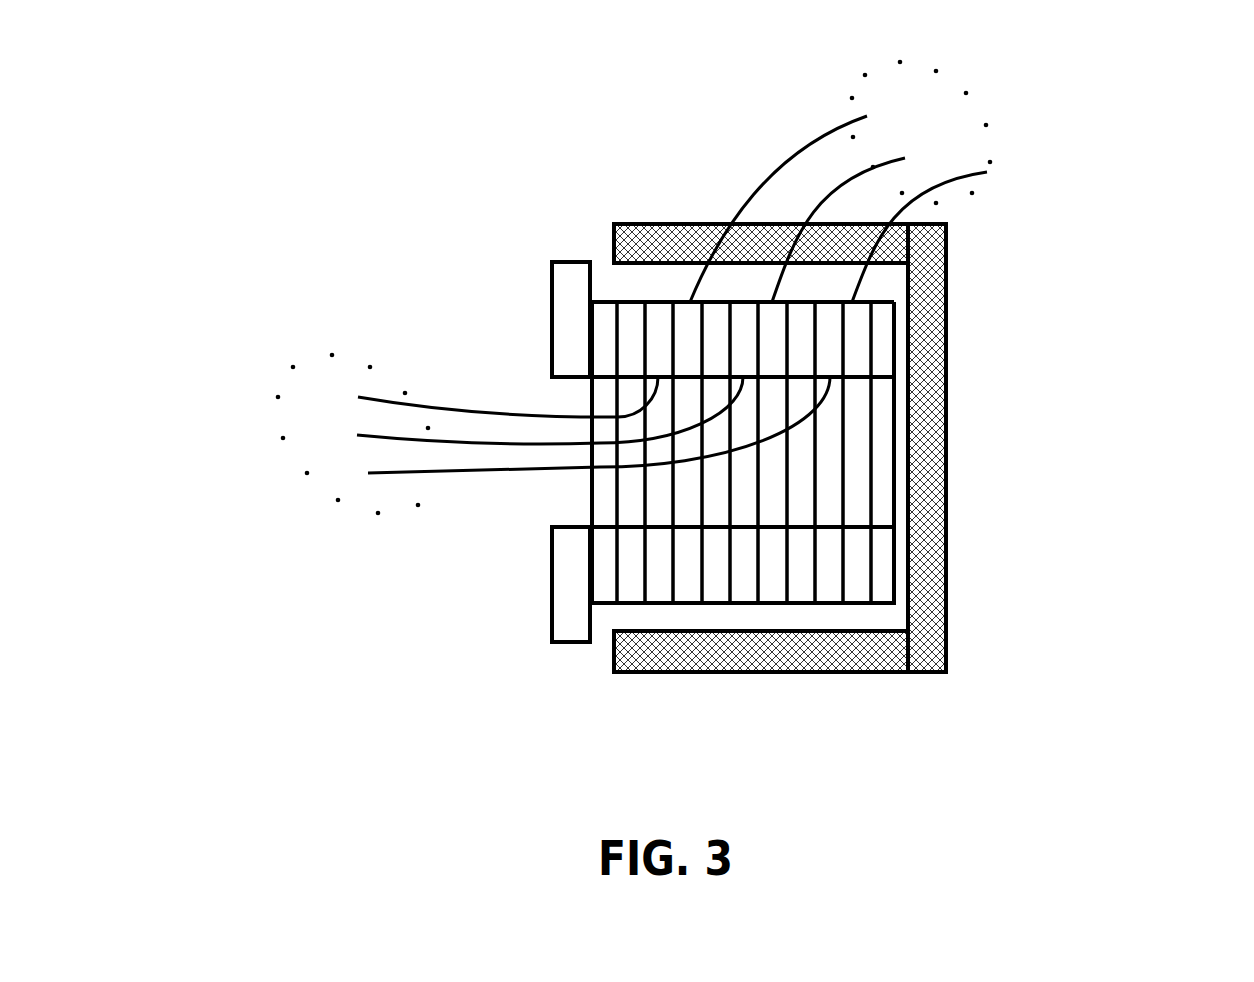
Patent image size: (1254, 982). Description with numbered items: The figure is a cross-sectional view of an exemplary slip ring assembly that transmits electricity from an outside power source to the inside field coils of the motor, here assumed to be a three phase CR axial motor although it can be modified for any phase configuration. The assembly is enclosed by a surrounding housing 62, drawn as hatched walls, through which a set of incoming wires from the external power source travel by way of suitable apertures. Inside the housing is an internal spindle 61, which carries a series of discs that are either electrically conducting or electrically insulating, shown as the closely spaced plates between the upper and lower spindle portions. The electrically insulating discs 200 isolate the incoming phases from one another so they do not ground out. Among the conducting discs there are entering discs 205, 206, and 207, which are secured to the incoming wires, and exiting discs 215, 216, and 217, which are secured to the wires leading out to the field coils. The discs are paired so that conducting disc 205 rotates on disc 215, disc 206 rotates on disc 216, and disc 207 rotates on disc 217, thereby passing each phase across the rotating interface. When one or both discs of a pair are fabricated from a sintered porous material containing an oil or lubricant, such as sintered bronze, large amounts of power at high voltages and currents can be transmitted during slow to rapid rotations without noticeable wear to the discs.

The internal spindle 61 is at (572, 583).
The surrounding housing 62 is at (613, 657).
The electrically insulating discs 200 is at (632, 557).
The entering electrically conducting disc 205 is at (688, 338).
The entering electrically conducting disc 206 is at (771, 339).
The entering electrically conducting disc 207 is at (855, 315).
The exiting electrically conducting disc 215 is at (660, 338).
The exiting electrically conducting disc 216 is at (742, 340).
The exiting electrically conducting disc 217 is at (830, 337).